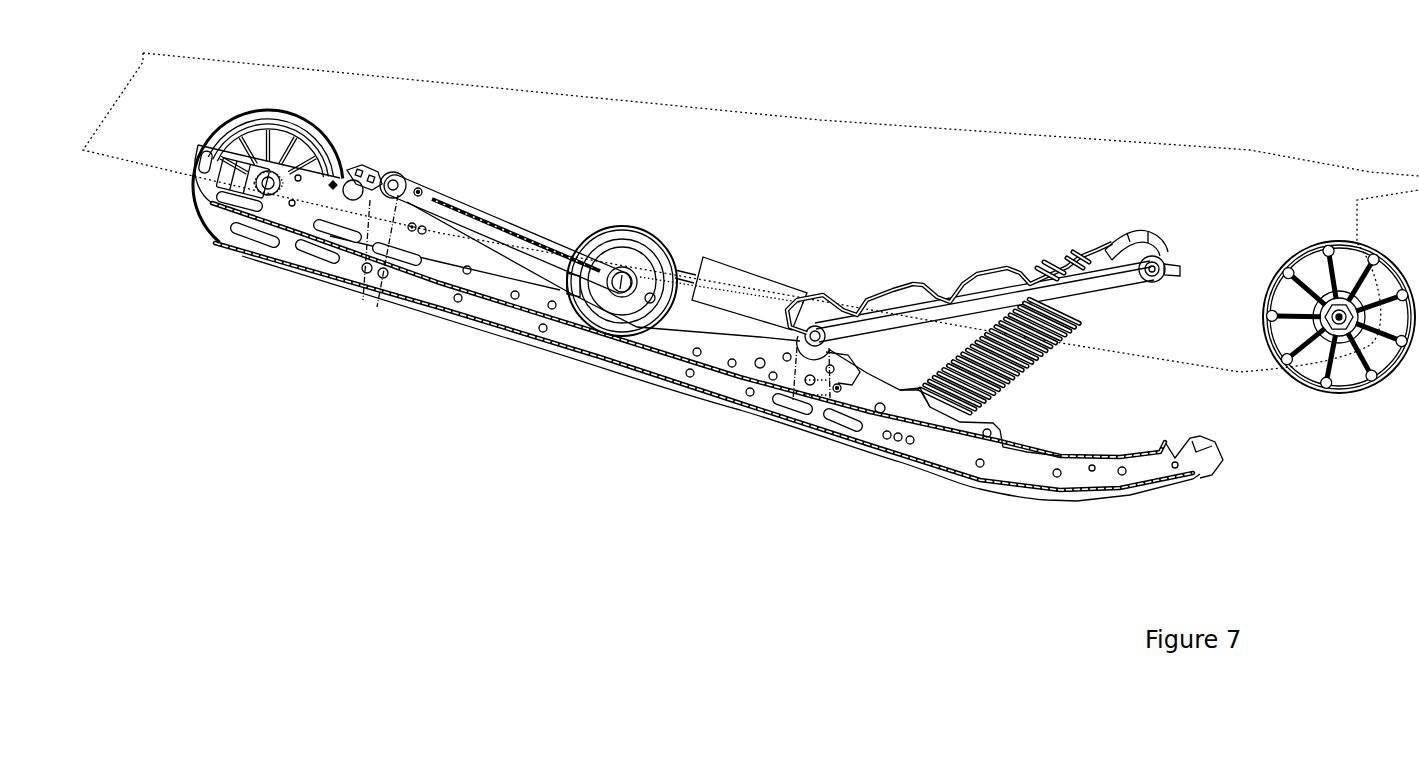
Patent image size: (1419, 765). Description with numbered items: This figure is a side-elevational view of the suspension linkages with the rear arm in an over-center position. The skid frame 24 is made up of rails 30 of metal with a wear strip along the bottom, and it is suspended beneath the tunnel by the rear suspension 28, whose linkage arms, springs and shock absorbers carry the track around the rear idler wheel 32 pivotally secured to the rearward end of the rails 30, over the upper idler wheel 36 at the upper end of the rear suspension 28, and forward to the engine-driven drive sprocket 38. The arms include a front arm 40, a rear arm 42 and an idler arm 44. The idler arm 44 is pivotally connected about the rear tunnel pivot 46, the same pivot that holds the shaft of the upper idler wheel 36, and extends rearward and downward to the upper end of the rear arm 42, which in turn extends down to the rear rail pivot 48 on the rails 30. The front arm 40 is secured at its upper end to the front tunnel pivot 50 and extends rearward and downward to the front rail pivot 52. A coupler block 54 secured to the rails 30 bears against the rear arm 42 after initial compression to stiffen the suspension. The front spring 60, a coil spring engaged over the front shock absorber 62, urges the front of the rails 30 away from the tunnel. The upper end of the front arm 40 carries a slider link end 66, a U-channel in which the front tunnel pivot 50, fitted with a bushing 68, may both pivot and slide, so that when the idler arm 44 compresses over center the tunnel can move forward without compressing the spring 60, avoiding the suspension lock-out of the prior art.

The skid frame 24 is at (556, 440).
The rear suspension 28 is at (868, 179).
The rails 30 is at (732, 392).
The rear idler wheel 32 is at (273, 120).
The upper idler wheel 36 is at (600, 236).
The drive sprocket 38 is at (1318, 268).
The front arm 40 is at (947, 305).
The rear arm 42 is at (380, 220).
The idler arm 44 is at (493, 220).
The rear tunnel pivot 46 is at (625, 270).
The rear rail pivot 48 is at (368, 277).
The front tunnel pivot 50 is at (1174, 266).
The front rail pivot 52 is at (808, 326).
The coupler block 54 is at (372, 168).
The front spring 60 is at (1050, 337).
The front shock absorber 62 is at (917, 397).
The slider link end 66 is at (1172, 270).
The bushing 68 is at (1157, 279).